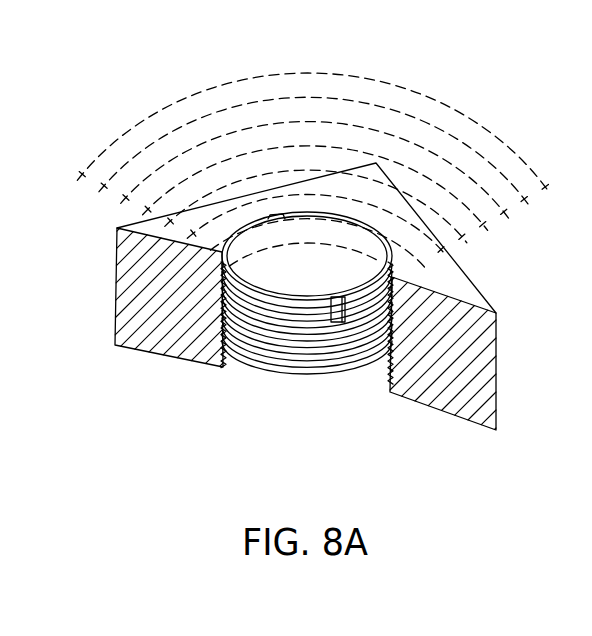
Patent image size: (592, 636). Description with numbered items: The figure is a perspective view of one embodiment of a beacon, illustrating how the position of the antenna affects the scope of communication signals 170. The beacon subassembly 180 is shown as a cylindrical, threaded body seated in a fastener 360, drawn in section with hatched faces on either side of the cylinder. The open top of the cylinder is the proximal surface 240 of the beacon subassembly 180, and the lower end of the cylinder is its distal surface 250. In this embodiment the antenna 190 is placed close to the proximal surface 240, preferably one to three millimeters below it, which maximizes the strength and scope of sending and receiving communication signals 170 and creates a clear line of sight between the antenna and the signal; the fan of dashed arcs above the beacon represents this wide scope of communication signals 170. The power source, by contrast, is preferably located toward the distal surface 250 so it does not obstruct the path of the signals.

The communication signals 170 is at (258, 70).
The beacon subassembly 180 is at (258, 363).
The antenna 190 is at (385, 370).
The proximal surface 240 is at (325, 267).
The distal surface 250 is at (315, 377).
The fastener 360 is at (467, 292).